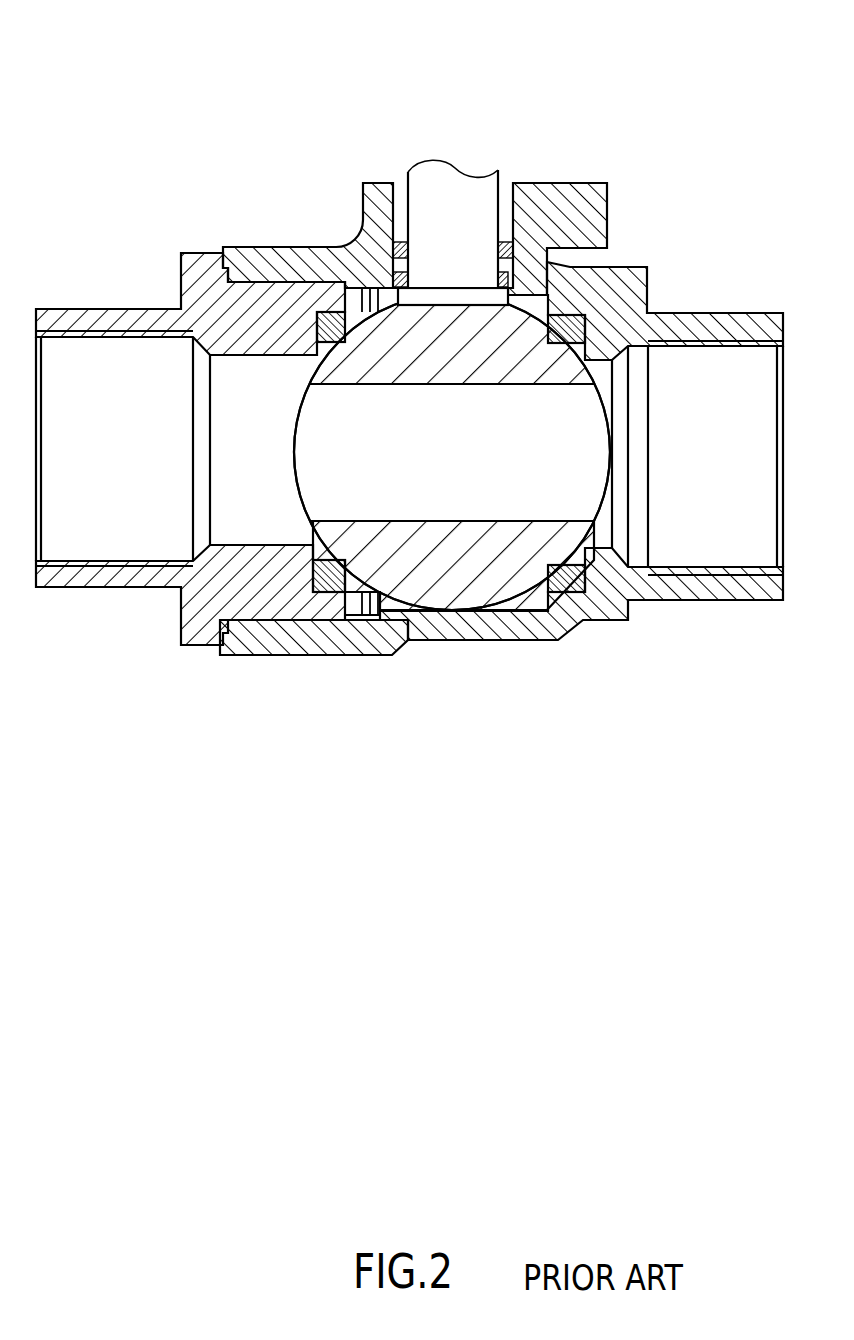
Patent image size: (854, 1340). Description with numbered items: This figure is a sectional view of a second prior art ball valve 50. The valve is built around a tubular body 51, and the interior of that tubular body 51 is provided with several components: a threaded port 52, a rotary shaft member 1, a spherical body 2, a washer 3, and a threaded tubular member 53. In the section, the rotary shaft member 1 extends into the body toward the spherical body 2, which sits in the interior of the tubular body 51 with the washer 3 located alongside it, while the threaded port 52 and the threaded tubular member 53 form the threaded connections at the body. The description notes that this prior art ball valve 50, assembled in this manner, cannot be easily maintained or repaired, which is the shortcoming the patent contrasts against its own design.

The prior art ball valve 50 is at (642, 87).
The rotary shaft member 1 is at (480, 213).
The spherical body 2 is at (523, 333).
The washer 3 is at (323, 318).
The tubular body 51 is at (587, 615).
The threaded port 52 is at (355, 621).
The threaded tubular member 53 is at (137, 357).